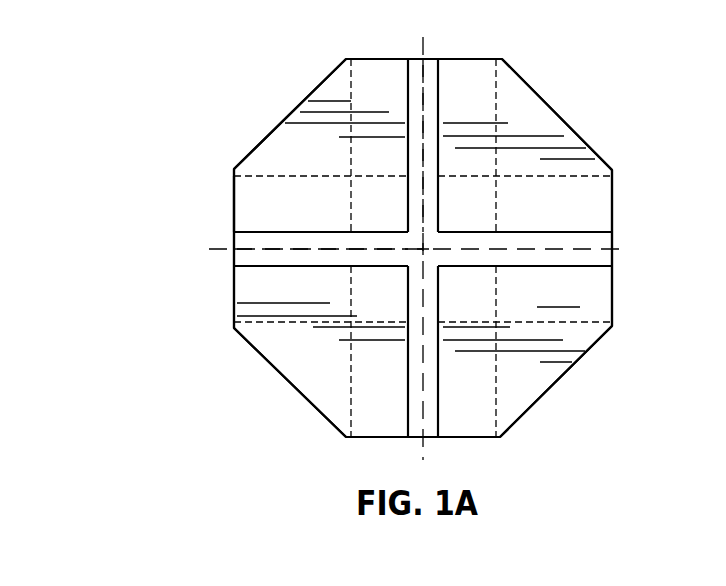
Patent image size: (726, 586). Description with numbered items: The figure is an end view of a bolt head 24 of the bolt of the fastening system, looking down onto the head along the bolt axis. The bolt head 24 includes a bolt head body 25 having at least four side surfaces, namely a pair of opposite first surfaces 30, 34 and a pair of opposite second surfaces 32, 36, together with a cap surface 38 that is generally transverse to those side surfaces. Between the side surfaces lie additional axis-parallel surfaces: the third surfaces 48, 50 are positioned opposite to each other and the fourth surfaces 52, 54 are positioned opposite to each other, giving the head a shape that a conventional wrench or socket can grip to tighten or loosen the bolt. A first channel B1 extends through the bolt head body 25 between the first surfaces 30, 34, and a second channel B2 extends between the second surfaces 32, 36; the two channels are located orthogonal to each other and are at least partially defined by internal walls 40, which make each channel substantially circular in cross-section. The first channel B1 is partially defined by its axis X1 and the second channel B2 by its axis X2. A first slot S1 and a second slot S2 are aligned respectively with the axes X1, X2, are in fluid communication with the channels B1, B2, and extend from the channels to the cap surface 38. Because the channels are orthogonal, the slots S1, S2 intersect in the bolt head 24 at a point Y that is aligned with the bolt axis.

The bolt head 24 is at (530, 69).
The bolt head body 25 is at (282, 153).
The first surface 30 is at (232, 277).
The second surface 32 is at (381, 57).
The first surface 34 is at (615, 203).
The second surface 36 is at (463, 438).
The cap surface 38 is at (580, 306).
The internal wall 40 is at (492, 391).
The third surface 48 is at (308, 93).
The third surface 50 is at (582, 357).
The fourth surface 52 is at (565, 122).
The fourth surface 54 is at (283, 380).
The first slot S1 is at (583, 257).
The second slot S2 is at (432, 103).
The first channel B1 is at (245, 205).
The second channel B2 is at (372, 428).
The axis X1 is at (305, 250).
The axis X2 is at (440, 180).
The point Y is at (425, 247).